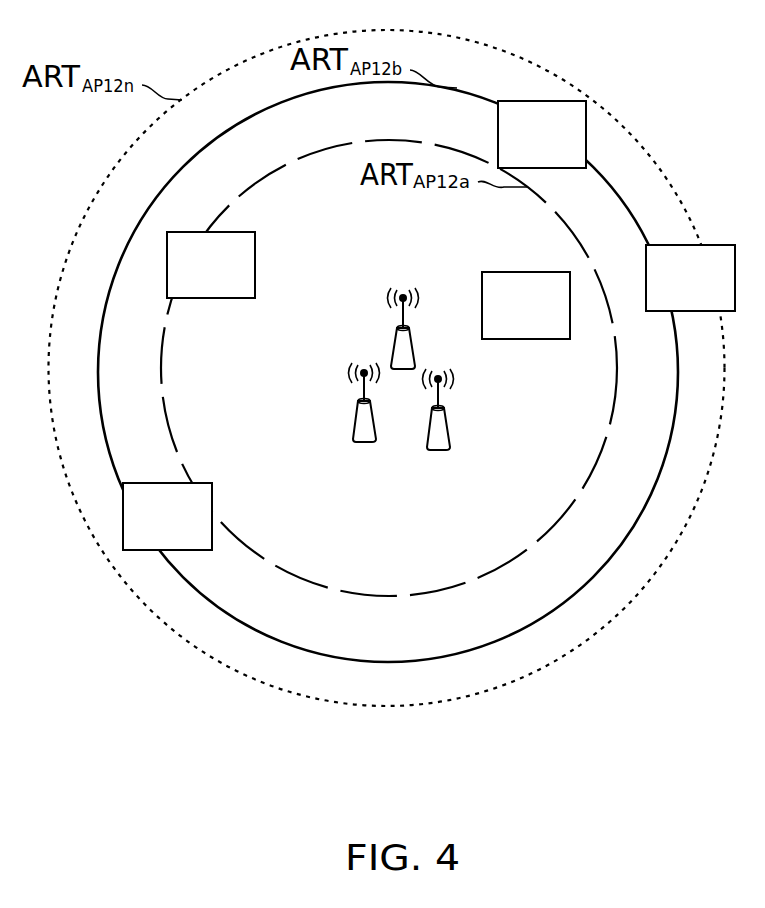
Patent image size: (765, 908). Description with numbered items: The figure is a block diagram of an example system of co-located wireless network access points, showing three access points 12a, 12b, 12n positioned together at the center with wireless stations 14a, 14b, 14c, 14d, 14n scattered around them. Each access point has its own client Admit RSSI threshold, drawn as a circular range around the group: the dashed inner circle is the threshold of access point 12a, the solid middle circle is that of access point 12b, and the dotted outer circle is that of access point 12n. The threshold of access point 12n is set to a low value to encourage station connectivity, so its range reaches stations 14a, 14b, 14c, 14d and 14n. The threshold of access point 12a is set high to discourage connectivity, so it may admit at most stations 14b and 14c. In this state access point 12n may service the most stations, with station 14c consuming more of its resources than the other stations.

The access point 12a is at (352, 432).
The access point 12b is at (448, 445).
The access point 12n is at (391, 351).
The wireless station 14a is at (149, 543).
The wireless station 14b is at (508, 332).
The wireless station 14c is at (193, 292).
The wireless station 14d is at (524, 161).
The wireless station 14n is at (672, 305).